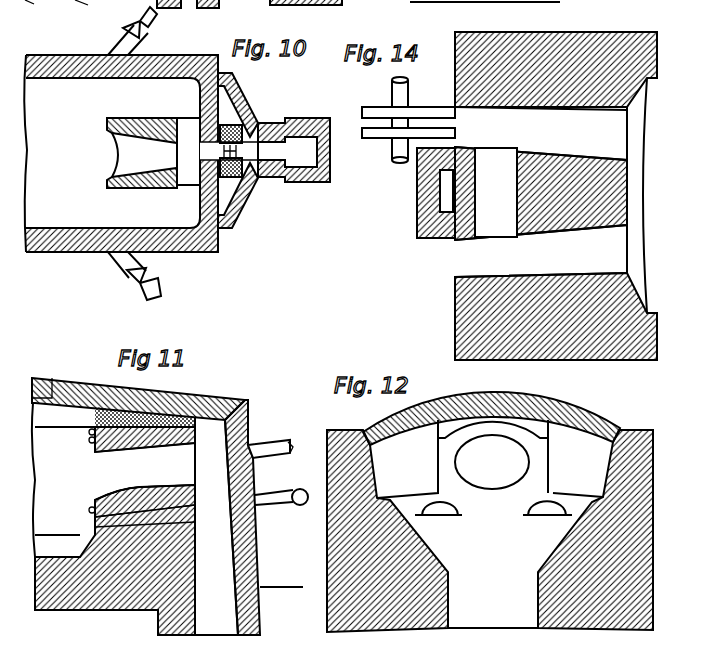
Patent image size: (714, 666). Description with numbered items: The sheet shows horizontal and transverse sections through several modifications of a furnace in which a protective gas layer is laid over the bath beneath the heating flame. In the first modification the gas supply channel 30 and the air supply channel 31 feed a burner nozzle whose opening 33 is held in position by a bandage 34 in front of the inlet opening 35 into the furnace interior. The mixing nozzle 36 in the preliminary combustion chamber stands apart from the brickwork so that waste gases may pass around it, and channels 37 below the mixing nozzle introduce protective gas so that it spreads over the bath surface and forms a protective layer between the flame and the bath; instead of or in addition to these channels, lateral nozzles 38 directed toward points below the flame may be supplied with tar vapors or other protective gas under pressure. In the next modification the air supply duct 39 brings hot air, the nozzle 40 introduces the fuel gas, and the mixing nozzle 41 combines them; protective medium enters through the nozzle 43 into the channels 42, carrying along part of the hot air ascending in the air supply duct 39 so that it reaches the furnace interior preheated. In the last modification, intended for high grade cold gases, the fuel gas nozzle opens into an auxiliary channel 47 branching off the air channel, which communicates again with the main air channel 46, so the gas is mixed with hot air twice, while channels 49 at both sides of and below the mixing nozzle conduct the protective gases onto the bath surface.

In FIG. 10, the gas supply channel 30 is at (309, 154).
In FIG. 10, the air supply channel 31 is at (191, 172).
In FIG. 10, the opening 33 is at (257, 177).
In FIG. 10, the bandage 34 is at (237, 168).
In FIG. 10, the inlet opening 35 is at (306, 137).
In FIG. 10, the mixing nozzle 36 is at (143, 160).
In FIG. 10, the channels 37 is at (227, 92).
In FIG. 10, the lateral nozzles 38 is at (140, 153).
In FIG. 11, the air supply duct 39 is at (210, 603).
In FIG. 12, the air supply duct 39 is at (493, 611).
In FIG. 11, the nozzle 40 is at (291, 448).
In FIG. 11, the mixing nozzle 41 is at (175, 465).
In FIG. 12, the mixing nozzle 41 is at (517, 458).
In FIG. 11, the channels 42 is at (125, 522).
In FIG. 12, the channels 42 is at (450, 513).
In FIG. 11, the nozzle 43 is at (281, 511).
In FIG. 14, the main air channel 46 is at (496, 192).
In FIG. 14, the auxiliary channel 47 is at (451, 189).
In FIG. 14, the channels 49 is at (541, 192).